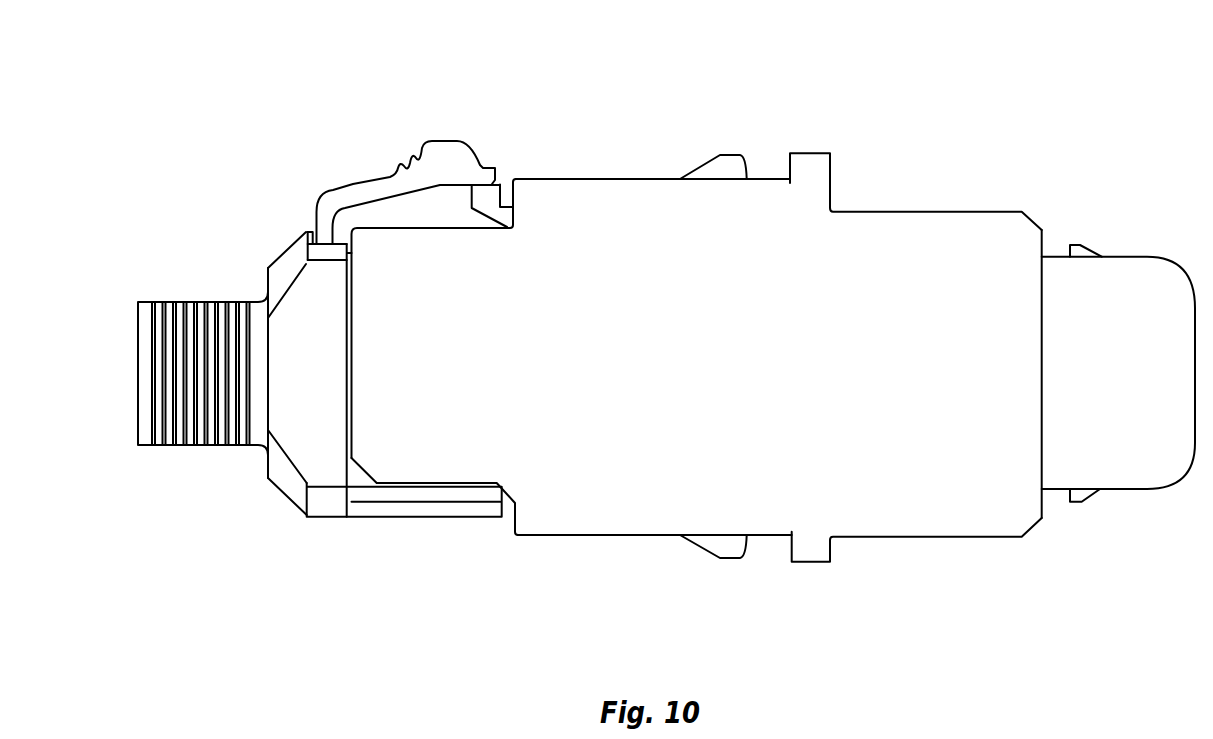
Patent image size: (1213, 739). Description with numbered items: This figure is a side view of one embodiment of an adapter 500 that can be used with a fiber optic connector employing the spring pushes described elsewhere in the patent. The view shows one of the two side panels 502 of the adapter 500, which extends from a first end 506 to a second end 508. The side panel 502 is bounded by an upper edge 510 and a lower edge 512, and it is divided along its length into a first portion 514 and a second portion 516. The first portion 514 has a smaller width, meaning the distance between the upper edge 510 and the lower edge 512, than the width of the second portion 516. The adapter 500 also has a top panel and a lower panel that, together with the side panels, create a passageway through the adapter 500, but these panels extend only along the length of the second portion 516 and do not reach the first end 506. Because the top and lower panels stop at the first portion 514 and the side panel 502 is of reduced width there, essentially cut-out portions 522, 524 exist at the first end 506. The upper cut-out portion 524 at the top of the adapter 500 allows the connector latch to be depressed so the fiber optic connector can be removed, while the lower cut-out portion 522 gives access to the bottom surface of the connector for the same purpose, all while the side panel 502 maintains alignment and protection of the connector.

The adapter 500 is at (666, 330).
The side panel 502 is at (927, 522).
The first end 506 is at (350, 413).
The second end 508 is at (1043, 245).
The upper edge 510 is at (932, 210).
The lower edge 512 is at (588, 538).
The first portion 514 is at (502, 77).
The second portion 516 is at (1043, 75).
The lower cut-out portion 522 is at (507, 552).
The cut-out portion 524 is at (511, 170).